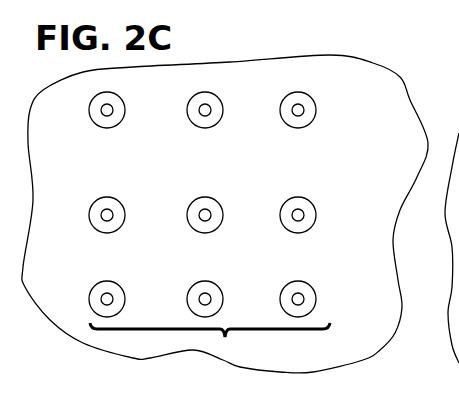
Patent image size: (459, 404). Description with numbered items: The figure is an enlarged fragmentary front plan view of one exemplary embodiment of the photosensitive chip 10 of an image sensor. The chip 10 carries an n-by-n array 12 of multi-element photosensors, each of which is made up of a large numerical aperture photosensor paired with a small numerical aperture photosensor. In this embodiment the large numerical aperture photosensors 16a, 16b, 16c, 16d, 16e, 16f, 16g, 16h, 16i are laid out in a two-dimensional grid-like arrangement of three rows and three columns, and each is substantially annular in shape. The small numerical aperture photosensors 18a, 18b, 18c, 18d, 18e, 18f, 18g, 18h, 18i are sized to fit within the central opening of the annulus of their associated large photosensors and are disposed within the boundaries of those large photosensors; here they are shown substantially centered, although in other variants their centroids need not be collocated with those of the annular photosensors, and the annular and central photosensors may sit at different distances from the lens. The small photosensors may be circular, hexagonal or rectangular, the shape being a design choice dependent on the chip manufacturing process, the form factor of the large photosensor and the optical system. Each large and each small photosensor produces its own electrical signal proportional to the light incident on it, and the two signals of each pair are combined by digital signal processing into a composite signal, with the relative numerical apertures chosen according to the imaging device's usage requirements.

The photosensitive chip 10 is at (297, 38).
The array of multi-element photosensors 12 is at (225, 337).
The large numerical aperture photosensor 16a is at (120, 97).
The large numerical aperture photosensor 16b is at (218, 97).
The large numerical aperture photosensor 16c is at (311, 97).
The large numerical aperture photosensor 16d is at (120, 202).
The large numerical aperture photosensor 16e is at (218, 202).
The large numerical aperture photosensor 16f is at (311, 202).
The large numerical aperture photosensor 16g is at (120, 286).
The large numerical aperture photosensor 16h is at (218, 286).
The large numerical aperture photosensor 16i is at (311, 286).
The small numerical aperture photosensor 18a is at (112, 113).
The small numerical aperture photosensor 18b is at (210, 113).
The small numerical aperture photosensor 18c is at (303, 113).
The small numerical aperture photosensor 18d is at (112, 218).
The small numerical aperture photosensor 18e is at (210, 218).
The small numerical aperture photosensor 18f is at (303, 218).
The small numerical aperture photosensor 18g is at (112, 302).
The small numerical aperture photosensor 18h is at (210, 302).
The small numerical aperture photosensor 18i is at (303, 302).